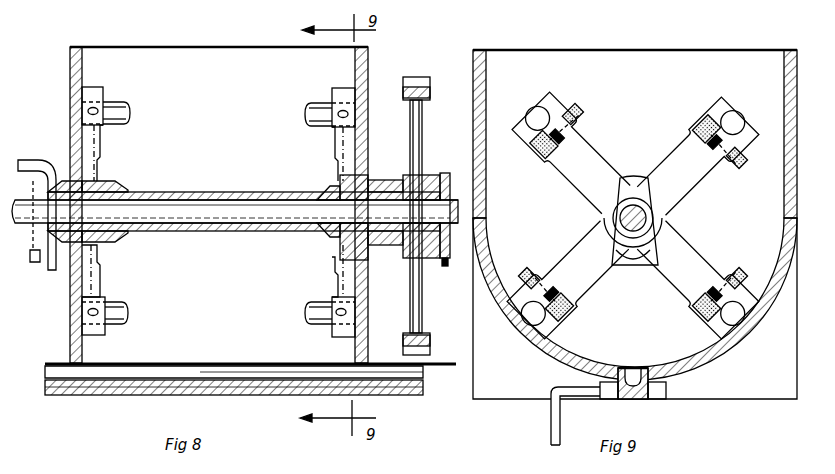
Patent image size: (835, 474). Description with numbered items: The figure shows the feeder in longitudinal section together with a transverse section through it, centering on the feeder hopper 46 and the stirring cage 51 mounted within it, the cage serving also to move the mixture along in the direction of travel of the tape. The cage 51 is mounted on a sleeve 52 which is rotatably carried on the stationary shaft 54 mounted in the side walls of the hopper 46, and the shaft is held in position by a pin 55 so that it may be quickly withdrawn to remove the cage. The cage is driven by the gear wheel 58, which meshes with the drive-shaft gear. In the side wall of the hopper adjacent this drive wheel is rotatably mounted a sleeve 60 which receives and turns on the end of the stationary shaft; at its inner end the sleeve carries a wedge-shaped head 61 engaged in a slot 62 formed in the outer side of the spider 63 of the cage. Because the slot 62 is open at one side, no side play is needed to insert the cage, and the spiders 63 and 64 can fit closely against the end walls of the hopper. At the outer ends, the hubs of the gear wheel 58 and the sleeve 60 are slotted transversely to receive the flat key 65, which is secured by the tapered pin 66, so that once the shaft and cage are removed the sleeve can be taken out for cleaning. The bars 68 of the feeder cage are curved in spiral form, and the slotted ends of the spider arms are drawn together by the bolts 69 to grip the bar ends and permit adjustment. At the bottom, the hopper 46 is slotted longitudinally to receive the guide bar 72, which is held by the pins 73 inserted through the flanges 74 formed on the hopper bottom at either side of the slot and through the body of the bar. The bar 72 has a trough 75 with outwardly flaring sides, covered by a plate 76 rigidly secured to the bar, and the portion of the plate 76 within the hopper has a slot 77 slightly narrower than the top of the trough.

In FIG. 8, the hopper 46 is at (73, 67).
In FIG. 9, the hopper 46 is at (480, 65).
In FIG. 8, the cage 51 is at (311, 96).
In FIG. 9, the cage 51 is at (543, 90).
In FIG. 8, the sleeve 52 is at (211, 196).
In FIG. 8, the shaft 54 is at (216, 209).
In FIG. 9, the shaft 54 is at (616, 218).
In FIG. 8, the pin 55 is at (31, 166).
In FIG. 8, the gear wheel 58 is at (430, 92).
In FIG. 8, the sleeve 60 is at (372, 195).
In FIG. 9, the sleeve 60 is at (651, 210).
In FIG. 8, the wedge-shaped head 61 is at (343, 192).
In FIG. 9, the wedge-shaped head 61 is at (661, 237).
In FIG. 8, the slot 62 is at (352, 250).
In FIG. 9, the slot 62 is at (653, 257).
In FIG. 8, the spider 63 is at (340, 278).
In FIG. 9, the spider 63 is at (587, 151).
In FIG. 8, the spider 64 is at (88, 167).
In FIG. 8, the flat key 65 is at (448, 218).
In FIG. 8, the tapered pin 66 is at (444, 252).
In FIG. 8, the bar 68 is at (122, 109).
In FIG. 9, the bar 68 is at (537, 117).
In FIG. 8, the bolt 69 is at (99, 314).
In FIG. 9, the bolt 69 is at (582, 112).
In FIG. 8, the guide bar 72 is at (60, 389).
In FIG. 9, the guide bar 72 is at (631, 397).
In FIG. 8, the pin 73 is at (118, 390).
In FIG. 9, the pin 73 is at (550, 421).
In FIG. 9, the flange 74 is at (606, 384).
In FIG. 8, the trough 75 is at (231, 371).
In FIG. 9, the trough 75 is at (634, 374).
In FIG. 8, the plate 76 is at (62, 364).
In FIG. 9, the plate 76 is at (626, 372).
In FIG. 8, the slot 77 is at (156, 367).